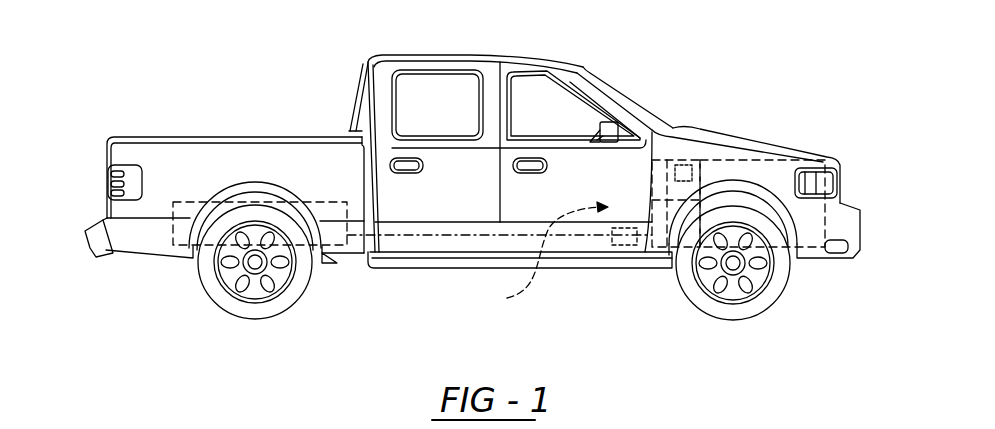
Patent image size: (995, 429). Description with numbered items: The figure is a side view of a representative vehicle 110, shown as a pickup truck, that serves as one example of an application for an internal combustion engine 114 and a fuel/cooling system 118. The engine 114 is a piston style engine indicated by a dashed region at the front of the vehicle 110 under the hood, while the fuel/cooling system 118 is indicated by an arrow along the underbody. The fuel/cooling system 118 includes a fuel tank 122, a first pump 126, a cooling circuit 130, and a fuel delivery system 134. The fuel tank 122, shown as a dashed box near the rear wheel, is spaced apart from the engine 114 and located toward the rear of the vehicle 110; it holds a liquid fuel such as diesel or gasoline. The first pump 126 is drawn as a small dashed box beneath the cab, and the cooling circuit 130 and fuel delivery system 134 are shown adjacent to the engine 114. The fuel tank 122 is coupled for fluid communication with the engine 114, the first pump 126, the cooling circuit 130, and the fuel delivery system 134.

The vehicle 110 is at (192, 72).
The internal combustion engine 114 is at (762, 162).
The fuel/cooling system 118 is at (542, 265).
The fuel tank 122 is at (255, 202).
The first pump 126 is at (625, 245).
The cooling circuit 130 is at (667, 162).
The fuel delivery system 134 is at (690, 162).